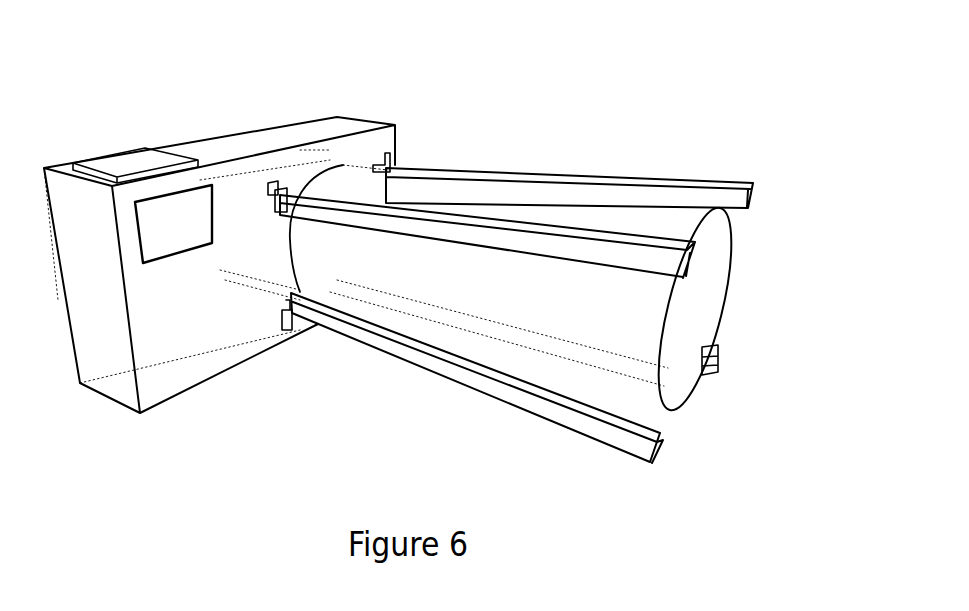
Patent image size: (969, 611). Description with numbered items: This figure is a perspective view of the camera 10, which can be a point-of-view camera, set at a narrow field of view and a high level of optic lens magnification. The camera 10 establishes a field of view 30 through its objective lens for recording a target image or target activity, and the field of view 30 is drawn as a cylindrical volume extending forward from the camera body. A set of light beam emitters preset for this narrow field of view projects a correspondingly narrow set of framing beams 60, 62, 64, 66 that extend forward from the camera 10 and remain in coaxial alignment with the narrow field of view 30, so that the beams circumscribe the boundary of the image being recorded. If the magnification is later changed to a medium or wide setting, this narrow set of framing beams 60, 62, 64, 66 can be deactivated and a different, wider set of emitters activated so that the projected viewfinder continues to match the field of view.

The camera 10 is at (165, 84).
The field of view 30 is at (725, 288).
The framing beam 60 is at (727, 183).
The framing beam 62 is at (715, 365).
The framing beam 64 is at (687, 250).
The framing beam 66 is at (647, 460).